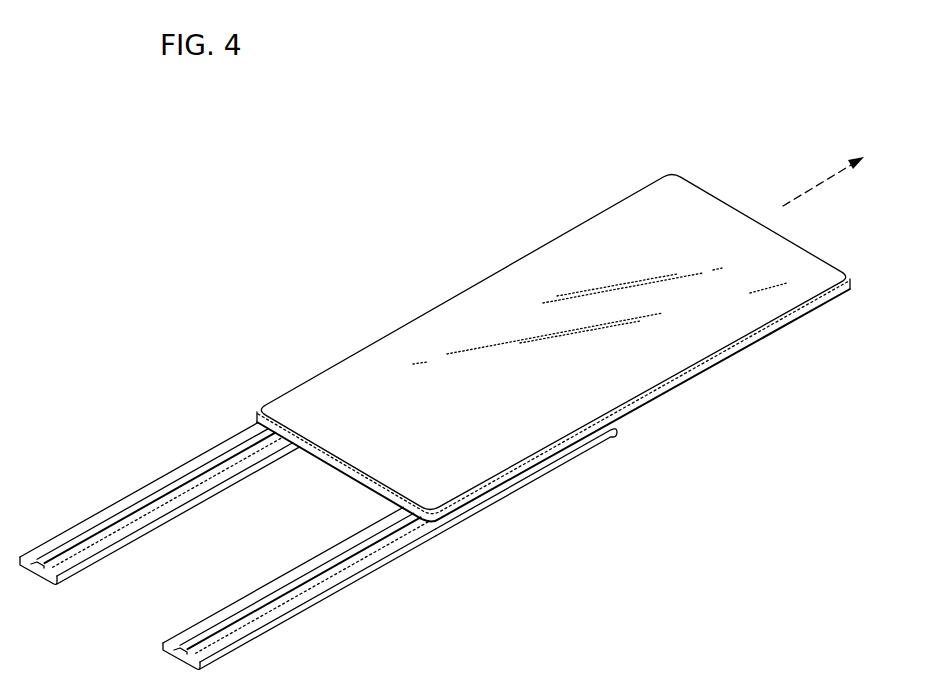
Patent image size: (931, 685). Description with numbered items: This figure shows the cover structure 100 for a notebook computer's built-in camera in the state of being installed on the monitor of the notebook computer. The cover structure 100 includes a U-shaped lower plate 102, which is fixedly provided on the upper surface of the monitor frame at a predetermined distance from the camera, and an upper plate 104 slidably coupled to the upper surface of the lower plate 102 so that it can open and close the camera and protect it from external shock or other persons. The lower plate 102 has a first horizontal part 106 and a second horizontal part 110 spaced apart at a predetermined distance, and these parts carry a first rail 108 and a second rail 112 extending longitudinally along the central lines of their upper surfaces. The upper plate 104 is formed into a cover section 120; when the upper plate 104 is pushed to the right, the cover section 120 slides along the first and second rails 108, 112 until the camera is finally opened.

The cover structure 100 is at (316, 311).
The U-shaped lower plate 102 is at (585, 447).
The upper plate 104 is at (603, 213).
The first horizontal part 106 is at (84, 520).
The first rail 108 is at (140, 504).
The second horizontal part 110 is at (298, 597).
The second rail 112 is at (373, 540).
The cover section 120 is at (493, 292).